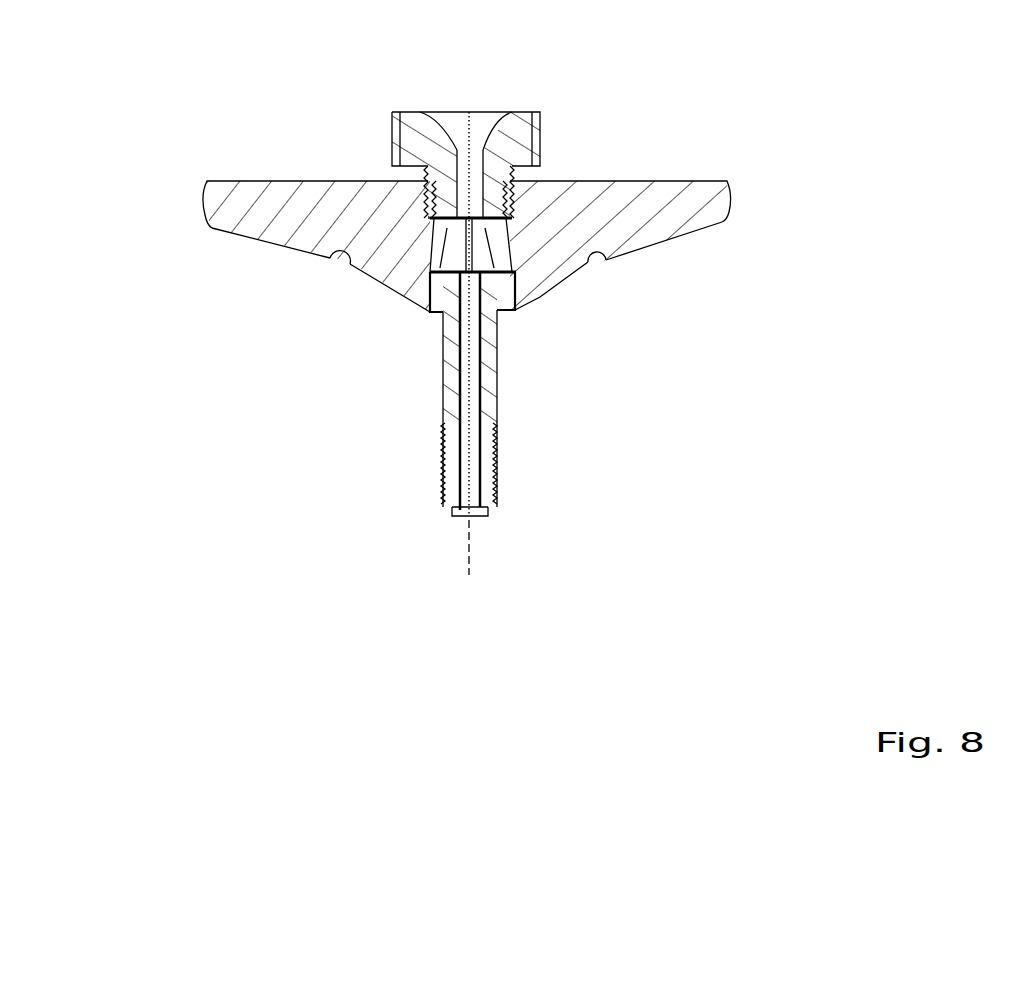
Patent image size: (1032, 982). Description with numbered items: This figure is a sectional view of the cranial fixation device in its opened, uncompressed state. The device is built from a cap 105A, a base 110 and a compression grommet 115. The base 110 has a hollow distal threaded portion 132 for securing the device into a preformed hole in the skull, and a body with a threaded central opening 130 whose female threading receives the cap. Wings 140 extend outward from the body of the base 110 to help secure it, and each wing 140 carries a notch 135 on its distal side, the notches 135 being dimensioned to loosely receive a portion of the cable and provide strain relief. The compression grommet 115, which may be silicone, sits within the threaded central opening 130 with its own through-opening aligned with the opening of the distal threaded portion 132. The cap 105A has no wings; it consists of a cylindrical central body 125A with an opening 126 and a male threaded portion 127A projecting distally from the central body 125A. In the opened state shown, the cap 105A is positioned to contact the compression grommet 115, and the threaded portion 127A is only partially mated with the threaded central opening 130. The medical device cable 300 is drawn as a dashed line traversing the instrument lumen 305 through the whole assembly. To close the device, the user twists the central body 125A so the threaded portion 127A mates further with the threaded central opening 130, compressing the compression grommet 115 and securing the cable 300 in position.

The cap 105A is at (344, 153).
The threaded portion 127A is at (430, 179).
The opening 126 is at (488, 123).
The medical device cable 300 is at (462, 121).
The base 110 is at (392, 271).
The wings 140 is at (685, 242).
The notches 135 is at (598, 263).
The threaded central opening 130 is at (708, 211).
The compression grommet 115 is at (500, 280).
The central body 125A is at (543, 148).
The instrument lumen 305 is at (425, 280).
The distal threaded portion 132 is at (492, 465).